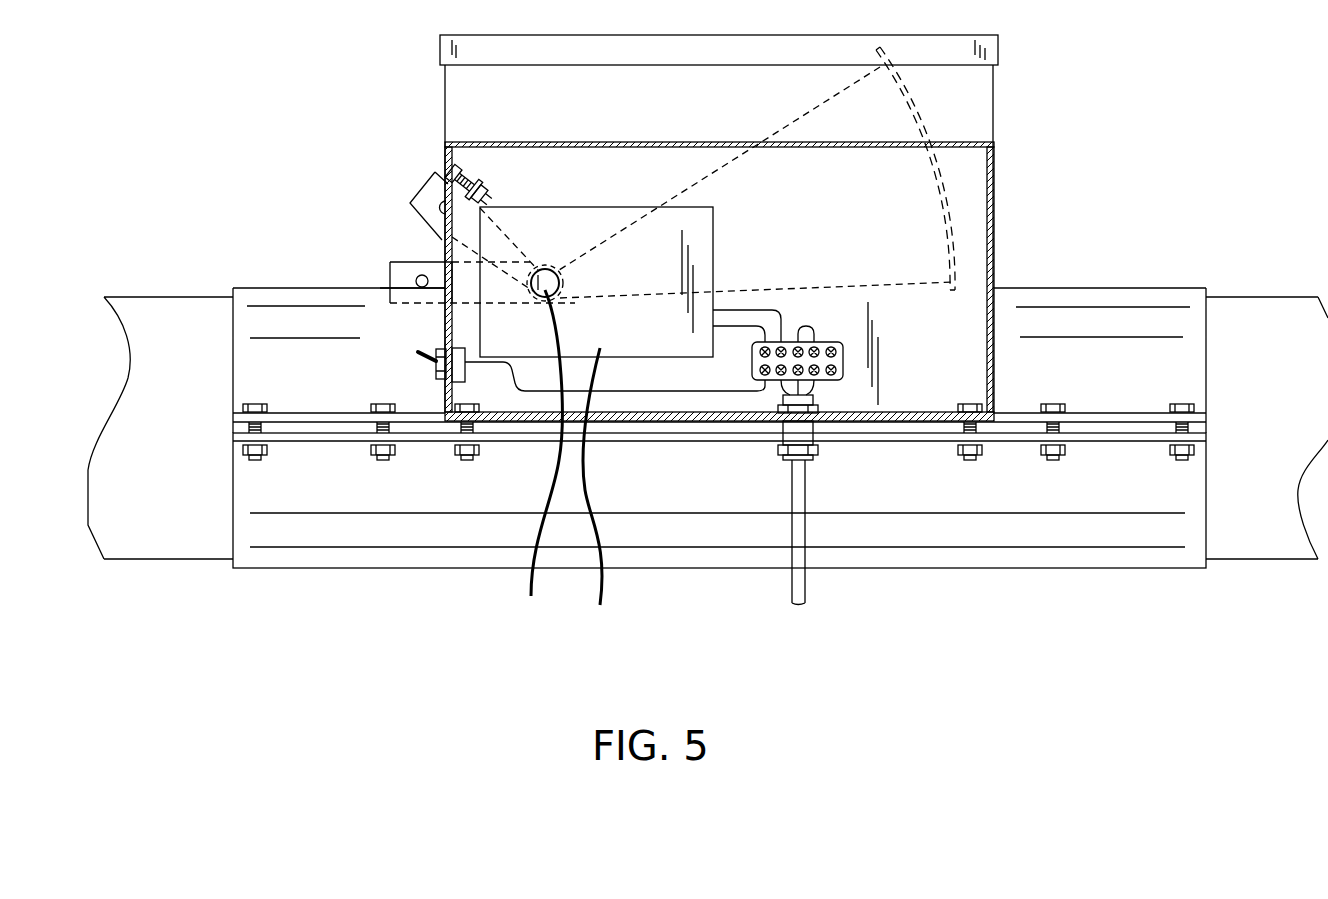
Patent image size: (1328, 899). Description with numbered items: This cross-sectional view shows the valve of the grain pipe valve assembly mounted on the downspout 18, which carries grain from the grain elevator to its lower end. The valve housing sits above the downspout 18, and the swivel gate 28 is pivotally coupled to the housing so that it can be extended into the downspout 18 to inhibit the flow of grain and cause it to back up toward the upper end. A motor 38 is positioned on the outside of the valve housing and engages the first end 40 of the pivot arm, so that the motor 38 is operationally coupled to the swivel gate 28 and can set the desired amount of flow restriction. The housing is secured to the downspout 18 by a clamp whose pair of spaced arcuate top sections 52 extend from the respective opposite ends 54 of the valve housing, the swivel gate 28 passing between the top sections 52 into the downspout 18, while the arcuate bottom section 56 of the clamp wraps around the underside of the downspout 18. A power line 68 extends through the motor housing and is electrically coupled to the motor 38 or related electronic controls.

The downspout 18 is at (1260, 313).
The swivel gate 28 is at (915, 100).
The motor 38 is at (598, 496).
The first end 40 is at (537, 462).
The spaced arcuate top sections 52 is at (284, 305).
The opposite ends 54 is at (450, 228).
The bottom section 56 is at (1043, 560).
The power line 68 is at (800, 583).